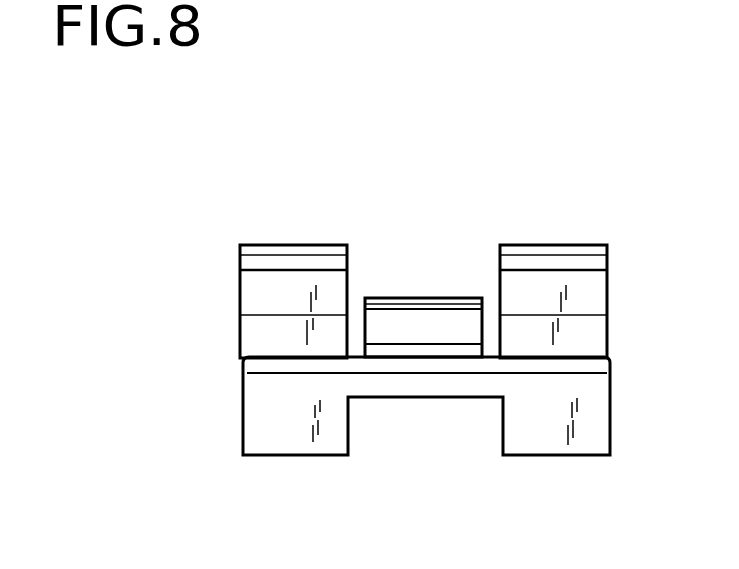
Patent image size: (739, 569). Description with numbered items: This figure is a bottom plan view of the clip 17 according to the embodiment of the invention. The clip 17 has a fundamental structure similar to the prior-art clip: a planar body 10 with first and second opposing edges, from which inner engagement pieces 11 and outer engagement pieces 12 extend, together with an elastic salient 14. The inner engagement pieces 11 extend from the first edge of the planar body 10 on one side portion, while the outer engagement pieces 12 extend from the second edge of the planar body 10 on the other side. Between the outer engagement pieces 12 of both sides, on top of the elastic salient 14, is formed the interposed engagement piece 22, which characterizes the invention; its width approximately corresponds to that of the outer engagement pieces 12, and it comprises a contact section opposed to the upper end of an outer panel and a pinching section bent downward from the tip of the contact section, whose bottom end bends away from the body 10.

The clip 17 is at (360, 343).
The planar body 10 is at (423, 398).
The inner engagement pieces 11 is at (300, 447).
The outer engagement pieces 12 is at (303, 245).
The elastic salient 14 is at (450, 343).
The interposed engagement piece 22 is at (408, 292).